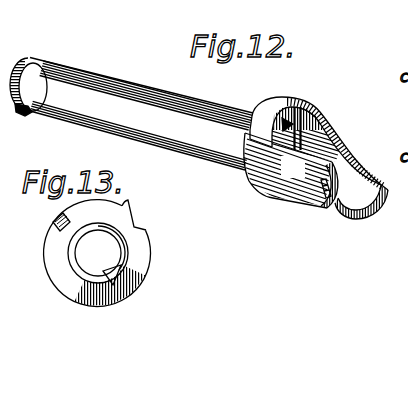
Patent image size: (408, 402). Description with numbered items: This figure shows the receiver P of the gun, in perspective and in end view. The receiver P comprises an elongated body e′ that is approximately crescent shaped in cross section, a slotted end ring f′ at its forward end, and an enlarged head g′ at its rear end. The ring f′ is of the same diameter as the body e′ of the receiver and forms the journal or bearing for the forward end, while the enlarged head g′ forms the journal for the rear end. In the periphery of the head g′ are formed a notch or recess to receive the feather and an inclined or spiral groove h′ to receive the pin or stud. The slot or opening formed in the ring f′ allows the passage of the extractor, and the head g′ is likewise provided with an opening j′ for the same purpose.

In FIG. 12, the receiver P is at (141, 94).
In FIG. 13, the receiver P is at (141, 211).
In FIG. 12, the elongated body e′ is at (138, 135).
In FIG. 12, the slotted end ring f′ is at (27, 75).
In FIG. 13, the slotted end ring f′ is at (100, 251).
In FIG. 12, the collar arch g is at (255, 125).
In FIG. 12, the enlarged head g′ is at (292, 170).
In FIG. 13, the enlarged head g′ is at (109, 244).
In FIG. 12, the inclined or spiral groove h′ is at (322, 184).
In FIG. 13, the inclined or spiral groove h′ is at (54, 220).
In FIG. 13, the opening j′ is at (124, 271).